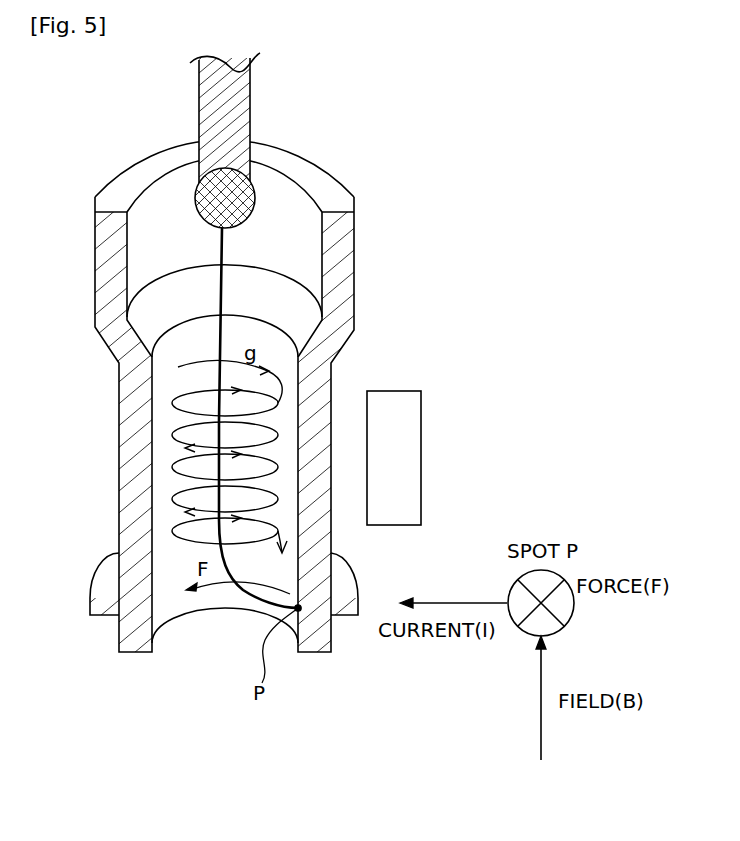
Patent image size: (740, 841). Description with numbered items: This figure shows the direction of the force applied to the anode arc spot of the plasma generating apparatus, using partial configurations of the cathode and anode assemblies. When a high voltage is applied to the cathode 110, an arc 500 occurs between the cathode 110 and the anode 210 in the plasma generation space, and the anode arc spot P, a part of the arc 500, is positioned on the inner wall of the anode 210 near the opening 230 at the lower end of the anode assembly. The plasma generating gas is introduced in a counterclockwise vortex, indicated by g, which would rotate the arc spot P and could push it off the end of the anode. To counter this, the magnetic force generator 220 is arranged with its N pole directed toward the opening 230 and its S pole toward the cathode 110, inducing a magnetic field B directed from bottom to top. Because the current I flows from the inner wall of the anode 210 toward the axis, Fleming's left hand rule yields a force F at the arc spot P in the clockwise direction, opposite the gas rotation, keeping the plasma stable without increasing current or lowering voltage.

The cathode 110 is at (242, 190).
The anode 210 is at (345, 282).
The magnetic force generator 220 is at (403, 391).
The opening 230 is at (213, 638).
The arc 500 is at (192, 536).